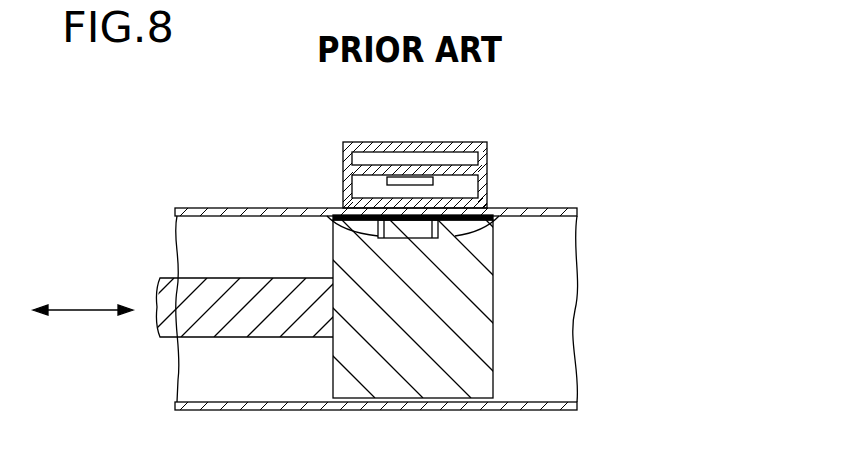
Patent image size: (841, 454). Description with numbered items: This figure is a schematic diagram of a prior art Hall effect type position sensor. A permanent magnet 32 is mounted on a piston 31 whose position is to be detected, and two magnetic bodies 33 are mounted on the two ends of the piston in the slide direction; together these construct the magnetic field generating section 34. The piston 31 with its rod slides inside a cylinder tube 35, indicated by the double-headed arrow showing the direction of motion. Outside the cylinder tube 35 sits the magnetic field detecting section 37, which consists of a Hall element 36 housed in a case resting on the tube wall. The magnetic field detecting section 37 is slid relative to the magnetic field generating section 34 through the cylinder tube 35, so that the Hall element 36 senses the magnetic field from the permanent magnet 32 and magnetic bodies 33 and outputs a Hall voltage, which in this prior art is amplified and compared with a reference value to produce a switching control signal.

The piston 31 is at (478, 378).
The permanent magnet 32 is at (405, 238).
The magnetic bodies 33 is at (327, 216).
The magnetic field generating section 34 is at (496, 255).
The cylinder tube 35 is at (200, 208).
The Hall element 36 is at (408, 177).
The magnetic field detecting section 37 is at (452, 142).